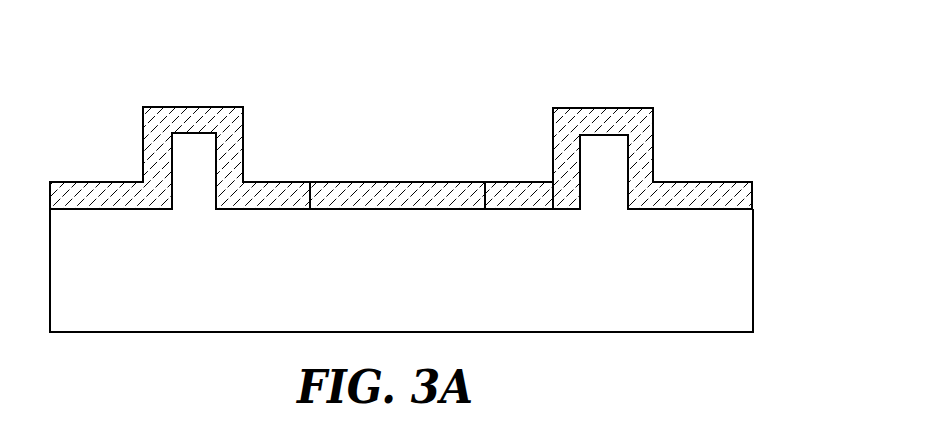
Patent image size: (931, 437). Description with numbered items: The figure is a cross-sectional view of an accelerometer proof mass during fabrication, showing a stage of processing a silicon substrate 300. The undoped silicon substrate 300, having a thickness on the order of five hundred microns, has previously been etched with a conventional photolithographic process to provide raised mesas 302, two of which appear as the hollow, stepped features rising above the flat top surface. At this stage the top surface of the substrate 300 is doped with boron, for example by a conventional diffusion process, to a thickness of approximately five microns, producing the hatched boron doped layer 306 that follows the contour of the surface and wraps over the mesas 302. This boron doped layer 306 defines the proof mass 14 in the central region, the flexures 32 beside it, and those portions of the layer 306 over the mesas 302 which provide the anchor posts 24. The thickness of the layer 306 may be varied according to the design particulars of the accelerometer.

The silicon substrate 300 is at (750, 258).
The boron doped layer 306 is at (753, 195).
The proof mass 14 is at (382, 179).
The flexures 32 is at (527, 176).
The anchor posts 24 is at (193, 107).
The mesas 302 is at (183, 155).